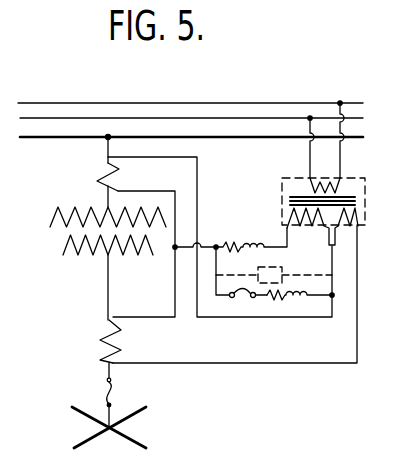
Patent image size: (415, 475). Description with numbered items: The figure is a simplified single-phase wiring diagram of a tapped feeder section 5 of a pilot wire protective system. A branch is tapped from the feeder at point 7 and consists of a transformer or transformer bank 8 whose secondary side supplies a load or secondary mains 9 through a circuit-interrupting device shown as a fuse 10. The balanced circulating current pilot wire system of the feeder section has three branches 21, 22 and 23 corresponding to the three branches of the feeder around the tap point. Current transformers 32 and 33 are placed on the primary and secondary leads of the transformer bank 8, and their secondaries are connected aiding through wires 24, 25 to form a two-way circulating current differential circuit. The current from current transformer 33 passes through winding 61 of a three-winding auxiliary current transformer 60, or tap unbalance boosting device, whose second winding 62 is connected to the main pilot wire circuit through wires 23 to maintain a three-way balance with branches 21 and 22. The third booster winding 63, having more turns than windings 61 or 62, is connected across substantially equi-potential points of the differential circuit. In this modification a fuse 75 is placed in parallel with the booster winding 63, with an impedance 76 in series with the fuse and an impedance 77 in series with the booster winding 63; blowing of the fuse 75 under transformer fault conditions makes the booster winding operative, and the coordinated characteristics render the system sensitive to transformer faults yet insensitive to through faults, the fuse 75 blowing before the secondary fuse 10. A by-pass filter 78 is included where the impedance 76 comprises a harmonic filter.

The feeder section 5 is at (210, 139).
The tap point 7 is at (106, 136).
The transformer or transformer bank 8 is at (68, 224).
The secondary mains 9 is at (127, 437).
The fuse 10 is at (107, 392).
The pilot wire branch 21 is at (180, 118).
The pilot wire branch 22 is at (351, 118).
The pilot wire branch 23 is at (339, 155).
The differential circuit wire 24 is at (148, 157).
The differential circuit wire 25 is at (165, 363).
The primary current transformer 32 is at (106, 164).
The secondary current transformer 33 is at (101, 340).
The three-winding auxiliary current transformer 60 is at (340, 204).
The first winding 61 is at (345, 226).
The second winding 62 is at (329, 186).
The booster winding 63 is at (300, 227).
The fuse 75 is at (242, 296).
The impedance 76 is at (279, 297).
The impedance 77 is at (252, 244).
The by-pass filter 78 is at (258, 270).